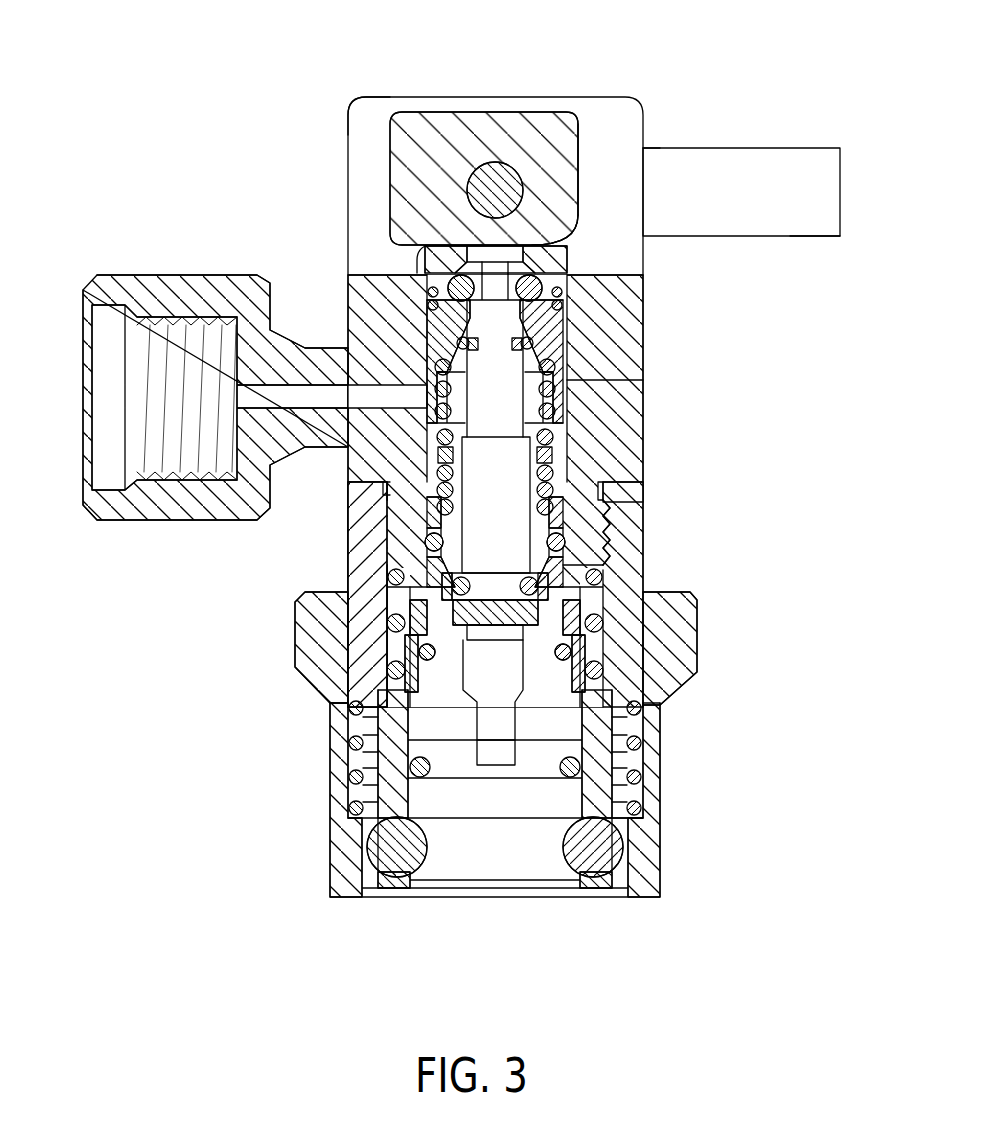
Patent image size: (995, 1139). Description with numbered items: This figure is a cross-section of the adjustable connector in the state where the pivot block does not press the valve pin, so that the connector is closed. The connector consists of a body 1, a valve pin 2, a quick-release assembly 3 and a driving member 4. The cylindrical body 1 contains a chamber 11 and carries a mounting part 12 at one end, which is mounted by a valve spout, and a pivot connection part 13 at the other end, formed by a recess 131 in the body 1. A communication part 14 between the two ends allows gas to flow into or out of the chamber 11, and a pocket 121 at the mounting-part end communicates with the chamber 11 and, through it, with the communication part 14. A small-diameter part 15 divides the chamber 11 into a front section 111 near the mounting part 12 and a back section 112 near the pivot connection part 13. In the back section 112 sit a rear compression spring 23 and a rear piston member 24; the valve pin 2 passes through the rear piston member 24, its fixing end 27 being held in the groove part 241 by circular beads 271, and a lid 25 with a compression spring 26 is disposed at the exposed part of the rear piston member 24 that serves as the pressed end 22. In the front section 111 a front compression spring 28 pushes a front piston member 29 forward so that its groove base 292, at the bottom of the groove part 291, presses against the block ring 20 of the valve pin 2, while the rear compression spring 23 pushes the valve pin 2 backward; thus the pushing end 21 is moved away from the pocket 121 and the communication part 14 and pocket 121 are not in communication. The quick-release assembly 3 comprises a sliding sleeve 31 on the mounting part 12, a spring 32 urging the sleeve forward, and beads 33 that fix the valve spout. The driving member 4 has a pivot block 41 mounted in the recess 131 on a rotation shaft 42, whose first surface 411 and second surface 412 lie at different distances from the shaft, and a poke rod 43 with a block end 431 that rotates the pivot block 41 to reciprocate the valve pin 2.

The body 1 is at (645, 442).
The chamber 11 is at (558, 690).
The front section 111 is at (565, 562).
The back section 112 is at (590, 382).
The mounting part 12 is at (636, 798).
The pocket 121 is at (553, 882).
The pivot connection part 13 is at (348, 183).
The recess 131 is at (370, 128).
The communication part 14 is at (130, 525).
The small-diameter part 15 is at (508, 462).
The valve pin 2 is at (470, 692).
The block ring 20 is at (355, 620).
The pushing end 21 is at (500, 764).
The pressed end 22 is at (580, 246).
The rear compression spring 23 is at (428, 396).
The rear piston member 24 is at (572, 336).
The groove part 241 is at (592, 306).
The lid 25 is at (567, 260).
The compression spring 26 is at (582, 292).
The fixing end 27 is at (513, 258).
The circular beads 271 is at (437, 272).
The front compression spring 28 is at (602, 500).
The front piston member 29 is at (600, 530).
The groove part 291 is at (565, 652).
The groove base 292 is at (550, 602).
The quick-release assembly 3 is at (300, 803).
The sliding sleeve 31 is at (345, 730).
The spring 32 is at (395, 582).
The beads 33 is at (367, 843).
The driving member 4 is at (684, 130).
The pivot block 41 is at (515, 128).
The first surface 411 is at (585, 128).
The second surface 412 is at (493, 228).
The rotation shaft 42 is at (492, 182).
The poke rod 43 is at (770, 172).
The block end 431 is at (842, 225).